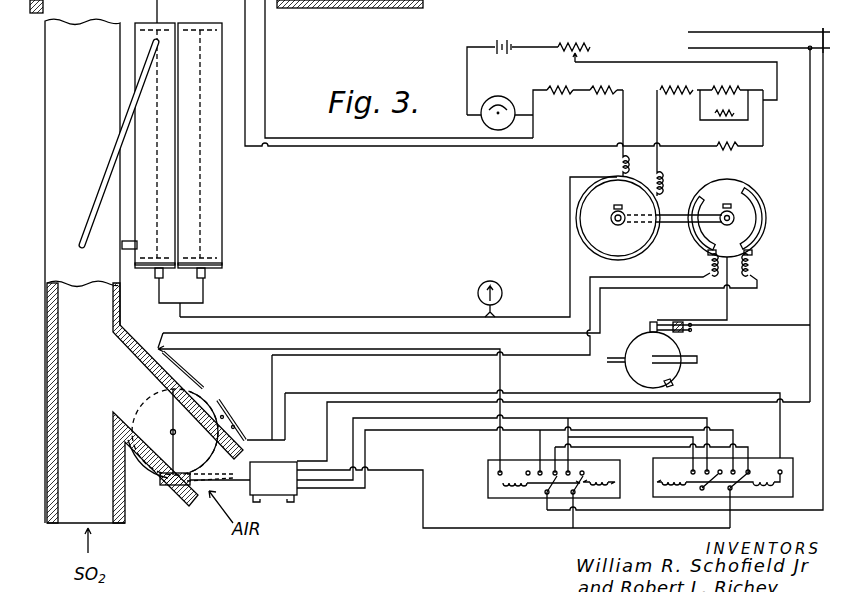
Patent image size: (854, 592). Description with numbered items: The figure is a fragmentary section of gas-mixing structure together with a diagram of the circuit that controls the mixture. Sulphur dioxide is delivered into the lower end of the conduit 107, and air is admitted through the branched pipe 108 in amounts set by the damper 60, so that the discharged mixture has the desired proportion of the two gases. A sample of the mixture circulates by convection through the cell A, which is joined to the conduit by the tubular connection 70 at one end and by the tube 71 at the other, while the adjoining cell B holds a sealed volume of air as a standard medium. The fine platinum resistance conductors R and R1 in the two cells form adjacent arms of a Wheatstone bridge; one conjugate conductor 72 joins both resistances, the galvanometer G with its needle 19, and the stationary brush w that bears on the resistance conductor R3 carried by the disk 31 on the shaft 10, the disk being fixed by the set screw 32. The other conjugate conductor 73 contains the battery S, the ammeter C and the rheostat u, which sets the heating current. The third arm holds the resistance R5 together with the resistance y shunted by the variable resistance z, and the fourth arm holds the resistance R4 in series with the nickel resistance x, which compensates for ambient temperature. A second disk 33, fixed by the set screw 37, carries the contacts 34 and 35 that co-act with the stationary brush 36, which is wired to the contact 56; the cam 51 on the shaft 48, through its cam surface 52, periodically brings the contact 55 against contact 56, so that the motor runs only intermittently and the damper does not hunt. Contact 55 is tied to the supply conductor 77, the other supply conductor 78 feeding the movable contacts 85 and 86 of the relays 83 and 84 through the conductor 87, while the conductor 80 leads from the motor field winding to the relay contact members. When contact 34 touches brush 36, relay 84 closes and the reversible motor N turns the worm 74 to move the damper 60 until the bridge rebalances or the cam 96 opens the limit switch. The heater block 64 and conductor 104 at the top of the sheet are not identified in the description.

The conduit 107 is at (79, 28).
The branched pipe 108 is at (143, 346).
The cell A is at (135, 55).
The cell B is at (222, 227).
The resistance conductor R is at (157, 153).
The resistance conductor R1 is at (205, 170).
The tube 71 is at (121, 143).
The tubular connection 70 is at (127, 252).
The conjugate conductor 72 is at (571, 200).
The galvanometer needle 19 is at (503, 293).
The galvanometer G is at (478, 293).
The conjugate conductor 73 is at (467, 78).
The battery S is at (510, 54).
The rheostat u is at (587, 44).
The ammeter C is at (495, 97).
The resistance x is at (555, 95).
The resistance R4 is at (597, 98).
The resistance R5 is at (665, 92).
The resistance y is at (730, 90).
The variable resistance z is at (724, 105).
The current supply conductor 77 is at (697, 48).
The current supply conductor 78 is at (771, 30).
The conductor 104 is at (436, 0).
The movable contact 85 is at (519, 5).
The conductor 87 is at (550, 3).
The conductor 80 is at (629, 0).
The movable contact 86 is at (706, 0).
The heater block 64 is at (353, 13).
The disk 31 is at (631, 249).
The resistance conductor R3 is at (600, 258).
The set screw 32 is at (621, 206).
The stationary brush w is at (618, 177).
The shaft 10 is at (667, 214).
The disk 33 is at (745, 187).
The set screw 37 is at (728, 204).
The contact 35 is at (704, 237).
The contact 34 is at (763, 225).
The stationary brush 36 is at (712, 278).
The contact 55 is at (648, 328).
The contact 56 is at (652, 323).
The cam 51 is at (634, 372).
The shaft 48 is at (697, 357).
The cam surface 52 is at (672, 386).
The damper 60 is at (176, 408).
The cam 96 is at (221, 403).
The worm 74 is at (165, 485).
The motor N is at (243, 482).
The relay 83 is at (487, 472).
The relay 84 is at (785, 458).